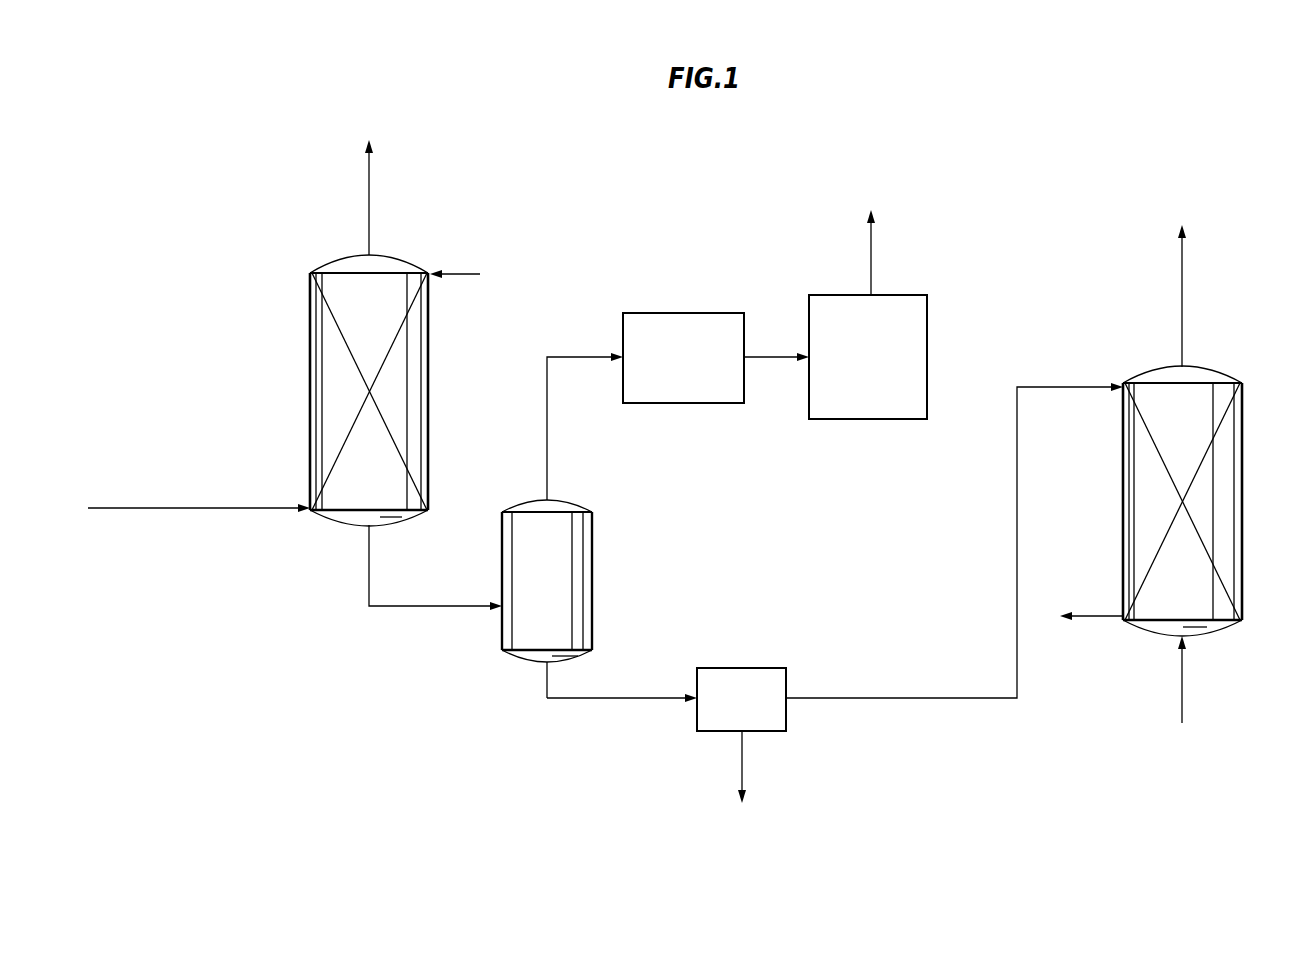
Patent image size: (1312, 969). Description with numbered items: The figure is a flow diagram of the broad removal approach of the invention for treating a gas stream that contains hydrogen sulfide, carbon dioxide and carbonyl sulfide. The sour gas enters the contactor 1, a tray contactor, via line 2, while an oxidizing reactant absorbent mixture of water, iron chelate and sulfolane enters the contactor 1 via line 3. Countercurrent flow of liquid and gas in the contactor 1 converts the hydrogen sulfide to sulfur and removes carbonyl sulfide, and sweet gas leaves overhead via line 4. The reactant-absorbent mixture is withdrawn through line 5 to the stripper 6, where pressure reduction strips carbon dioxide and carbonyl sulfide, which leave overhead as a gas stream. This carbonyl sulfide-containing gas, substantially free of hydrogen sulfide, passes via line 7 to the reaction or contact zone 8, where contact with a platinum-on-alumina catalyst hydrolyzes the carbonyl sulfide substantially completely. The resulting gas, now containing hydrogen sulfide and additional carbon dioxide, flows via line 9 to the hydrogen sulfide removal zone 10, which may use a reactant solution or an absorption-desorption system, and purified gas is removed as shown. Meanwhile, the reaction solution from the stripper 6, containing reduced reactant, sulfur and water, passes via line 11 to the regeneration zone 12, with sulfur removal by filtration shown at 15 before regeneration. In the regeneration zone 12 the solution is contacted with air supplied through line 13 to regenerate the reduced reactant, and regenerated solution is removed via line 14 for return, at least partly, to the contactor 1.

The contactor 1 is at (309, 343).
The line 2 is at (243, 506).
The line 3 is at (466, 274).
The line 4 is at (368, 173).
The line 5 is at (430, 607).
The stripper 6 is at (594, 573).
The line 7 is at (546, 416).
The reaction or contact zone 8 is at (672, 313).
The line 9 is at (773, 360).
The H2S removal zone 10 is at (928, 318).
The line 11 is at (607, 700).
The regeneration zone 12 is at (1244, 463).
The line 13 is at (1184, 677).
The line 14 is at (1095, 621).
The sulfur removal 15 is at (755, 668).